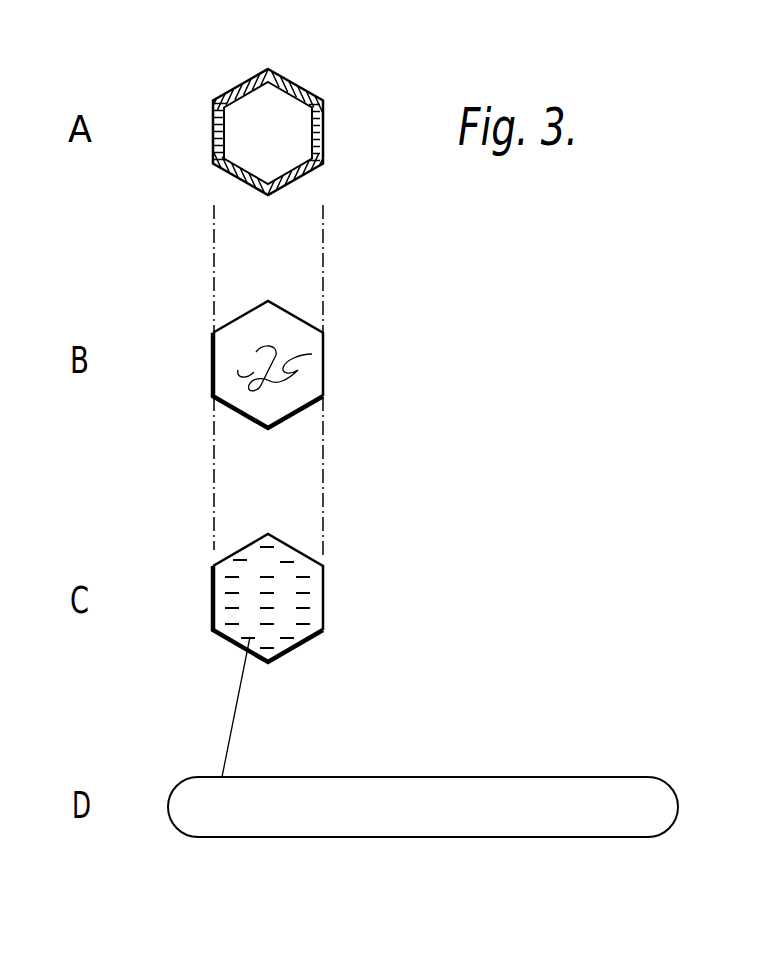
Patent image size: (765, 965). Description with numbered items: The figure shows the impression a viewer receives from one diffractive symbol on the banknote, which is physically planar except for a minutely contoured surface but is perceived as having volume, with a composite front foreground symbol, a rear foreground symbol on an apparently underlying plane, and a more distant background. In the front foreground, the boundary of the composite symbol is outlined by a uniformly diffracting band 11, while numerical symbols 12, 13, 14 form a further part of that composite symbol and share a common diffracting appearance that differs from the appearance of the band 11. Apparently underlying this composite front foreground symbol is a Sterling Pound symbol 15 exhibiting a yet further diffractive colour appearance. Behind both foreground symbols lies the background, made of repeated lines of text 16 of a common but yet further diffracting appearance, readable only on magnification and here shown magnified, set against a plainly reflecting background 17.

The uniformly diffracting band 11 is at (292, 83).
The numerical symbol 12 is at (250, 133).
The numerical symbol 13 is at (265, 112).
The numerical symbol 14 is at (293, 135).
The Sterling Pound symbol 15 is at (290, 357).
The repeated lines of text 16 is at (285, 562).
The plainly reflecting background 17 is at (287, 597).